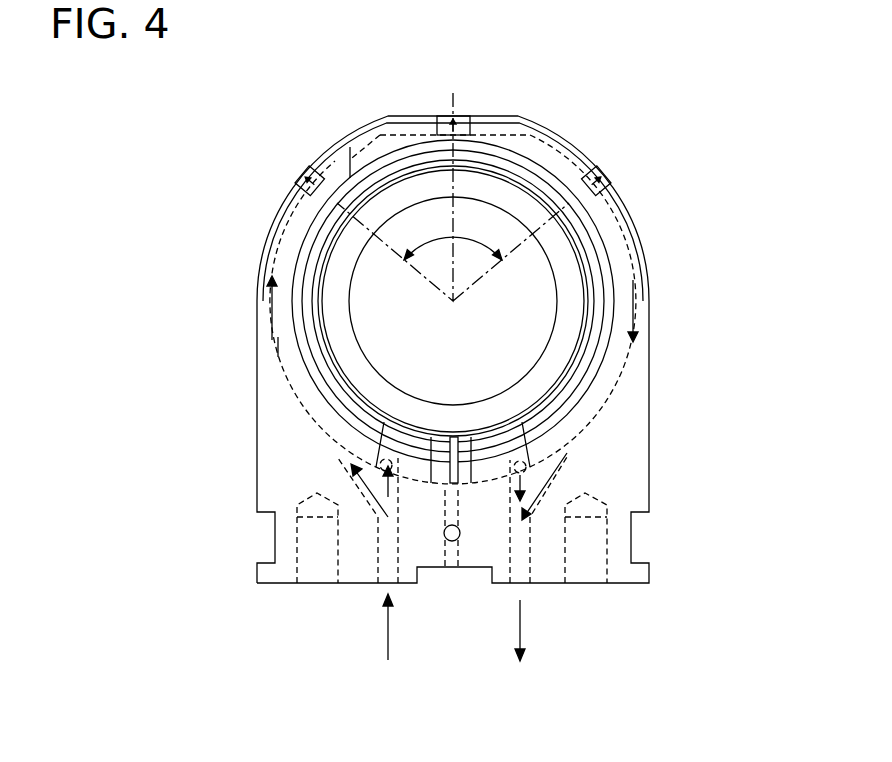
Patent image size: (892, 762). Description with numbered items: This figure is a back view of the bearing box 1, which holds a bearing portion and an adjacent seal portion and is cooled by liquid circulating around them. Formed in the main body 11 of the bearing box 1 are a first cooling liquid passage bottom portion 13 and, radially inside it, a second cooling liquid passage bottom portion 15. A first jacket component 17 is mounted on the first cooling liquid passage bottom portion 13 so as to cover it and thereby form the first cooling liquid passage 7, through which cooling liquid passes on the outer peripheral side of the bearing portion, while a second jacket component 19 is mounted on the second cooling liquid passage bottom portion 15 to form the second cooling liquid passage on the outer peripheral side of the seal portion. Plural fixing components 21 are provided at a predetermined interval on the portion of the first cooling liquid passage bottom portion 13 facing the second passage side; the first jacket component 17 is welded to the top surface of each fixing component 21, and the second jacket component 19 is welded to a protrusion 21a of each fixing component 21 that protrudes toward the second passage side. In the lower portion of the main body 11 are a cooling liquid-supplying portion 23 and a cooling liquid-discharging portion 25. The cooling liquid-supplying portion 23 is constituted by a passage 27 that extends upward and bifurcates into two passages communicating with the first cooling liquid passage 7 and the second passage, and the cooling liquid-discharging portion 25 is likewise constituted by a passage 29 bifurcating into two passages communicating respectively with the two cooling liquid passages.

The bearing box 1 is at (766, 139).
The first cooling liquid passage 7 is at (391, 136).
The main body 11 is at (648, 478).
The first cooling liquid passage bottom portion 13 is at (535, 141).
The second cooling liquid passage bottom portion 15 is at (319, 406).
The first jacket component 17 is at (642, 235).
The second jacket component 19 is at (278, 353).
The fixing component 21 is at (470, 119).
The protrusion 21a is at (438, 119).
The cooling liquid-supplying portion 23 is at (382, 586).
The cooling liquid-discharging portion 25 is at (518, 586).
The passage 27 is at (340, 462).
The passage 29 is at (565, 471).